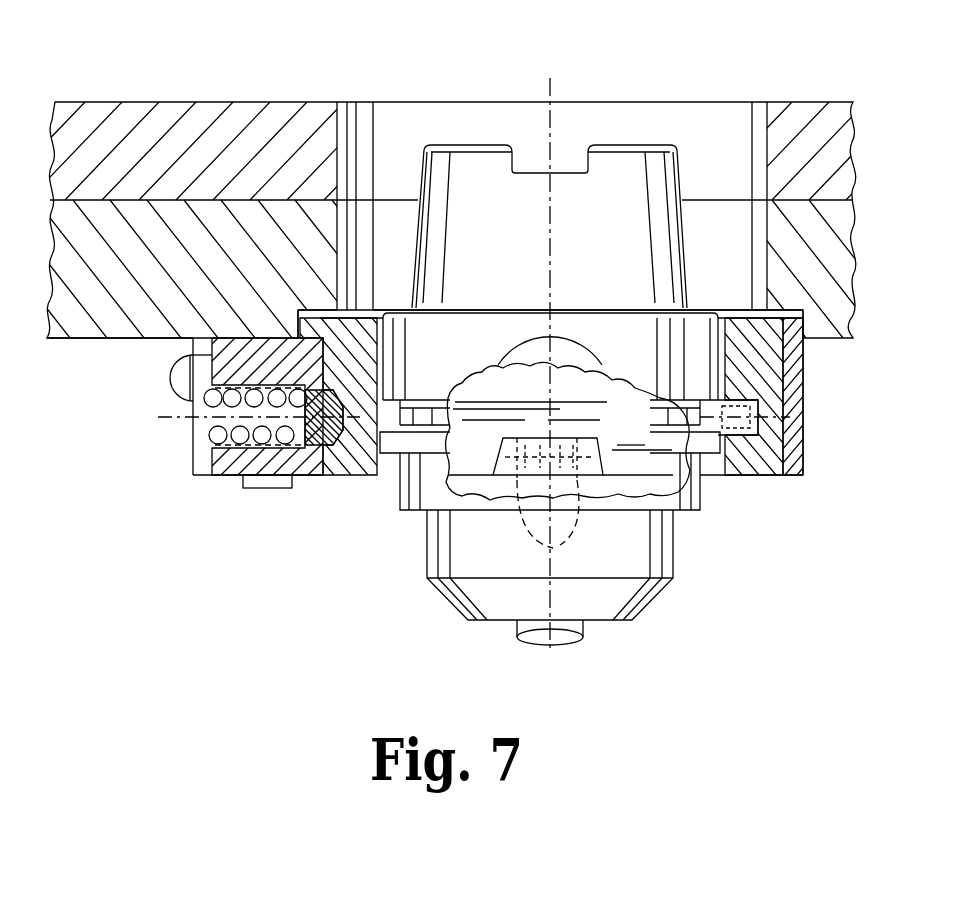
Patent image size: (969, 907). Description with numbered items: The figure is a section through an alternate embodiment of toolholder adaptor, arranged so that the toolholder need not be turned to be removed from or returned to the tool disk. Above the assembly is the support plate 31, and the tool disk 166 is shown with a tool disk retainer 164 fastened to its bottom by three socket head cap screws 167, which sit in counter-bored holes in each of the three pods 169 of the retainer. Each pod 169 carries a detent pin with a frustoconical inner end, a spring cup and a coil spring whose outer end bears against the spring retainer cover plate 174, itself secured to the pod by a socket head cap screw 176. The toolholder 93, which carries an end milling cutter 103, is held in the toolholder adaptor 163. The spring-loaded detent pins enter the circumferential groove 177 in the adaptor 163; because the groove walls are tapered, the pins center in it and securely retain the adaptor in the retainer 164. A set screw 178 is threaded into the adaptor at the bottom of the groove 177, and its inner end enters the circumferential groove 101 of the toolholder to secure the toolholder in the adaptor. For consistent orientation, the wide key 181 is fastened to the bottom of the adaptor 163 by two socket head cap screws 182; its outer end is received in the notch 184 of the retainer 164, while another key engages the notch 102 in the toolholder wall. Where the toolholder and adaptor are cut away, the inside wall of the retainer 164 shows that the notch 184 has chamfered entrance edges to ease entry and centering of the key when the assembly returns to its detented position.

The support plate 31 is at (172, 107).
The toolholder 93 is at (388, 570).
The circumferential groove 101 is at (386, 410).
The notch 102 is at (563, 352).
The end milling cutter 103 is at (578, 636).
The toolholder adaptor 163 is at (355, 478).
The tool disk retainer 164 is at (150, 340).
The tool disk 166 is at (107, 340).
The socket head cap screws 167 is at (265, 488).
The pods 169 is at (215, 476).
The spring retainer cover plate 174 is at (193, 445).
The socket head cap screw 176 is at (173, 383).
The circumferential groove 177 is at (773, 408).
The set screw 178 is at (737, 422).
The wide key 181 is at (550, 440).
The socket head cap screws 182 is at (553, 548).
The notch 184 is at (495, 477).